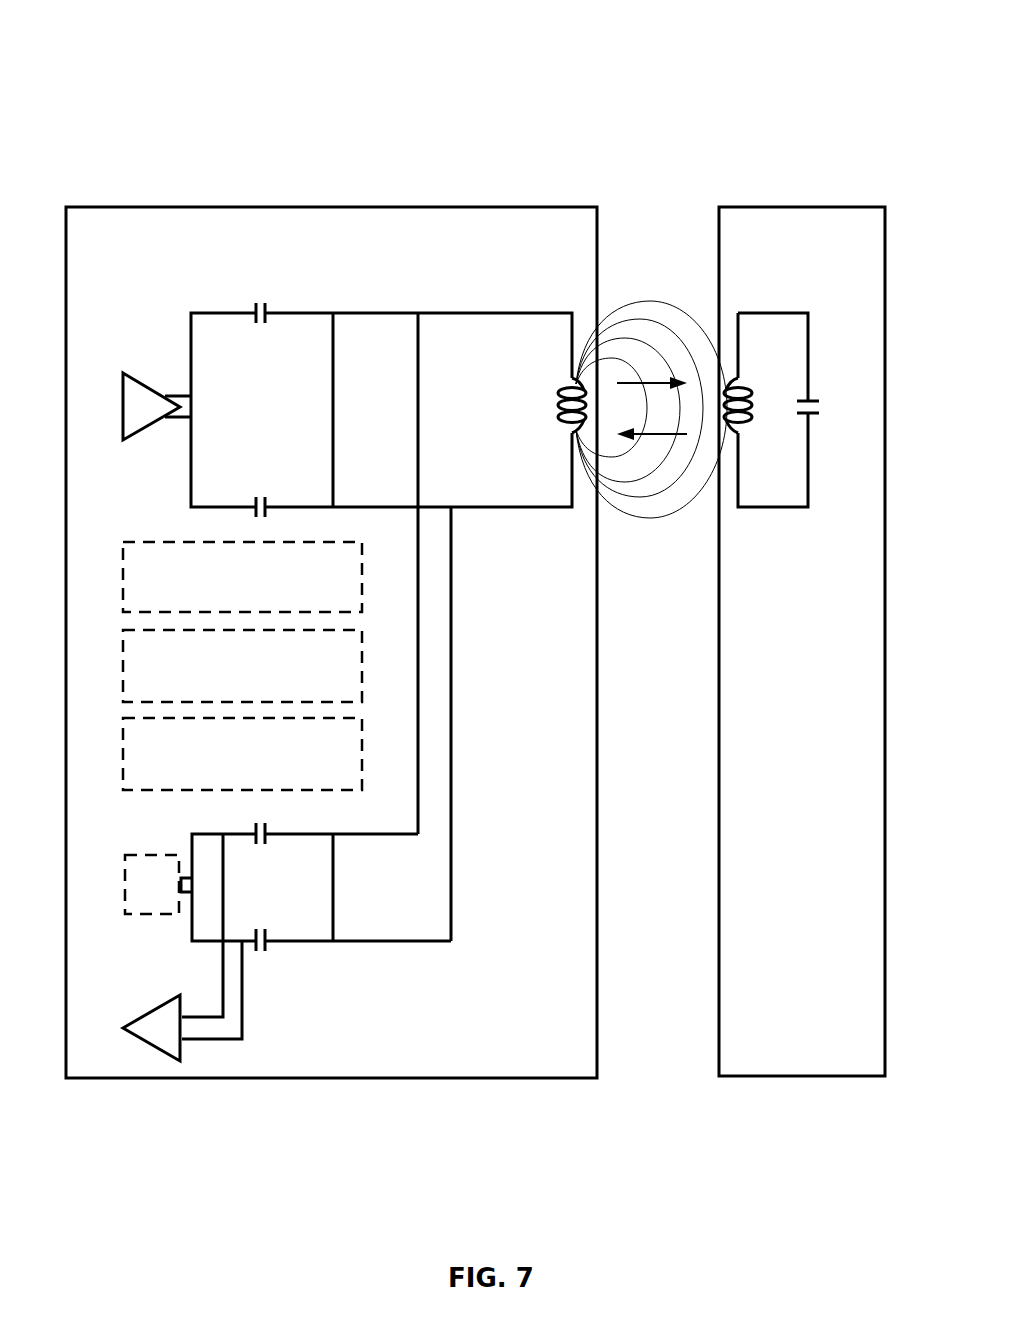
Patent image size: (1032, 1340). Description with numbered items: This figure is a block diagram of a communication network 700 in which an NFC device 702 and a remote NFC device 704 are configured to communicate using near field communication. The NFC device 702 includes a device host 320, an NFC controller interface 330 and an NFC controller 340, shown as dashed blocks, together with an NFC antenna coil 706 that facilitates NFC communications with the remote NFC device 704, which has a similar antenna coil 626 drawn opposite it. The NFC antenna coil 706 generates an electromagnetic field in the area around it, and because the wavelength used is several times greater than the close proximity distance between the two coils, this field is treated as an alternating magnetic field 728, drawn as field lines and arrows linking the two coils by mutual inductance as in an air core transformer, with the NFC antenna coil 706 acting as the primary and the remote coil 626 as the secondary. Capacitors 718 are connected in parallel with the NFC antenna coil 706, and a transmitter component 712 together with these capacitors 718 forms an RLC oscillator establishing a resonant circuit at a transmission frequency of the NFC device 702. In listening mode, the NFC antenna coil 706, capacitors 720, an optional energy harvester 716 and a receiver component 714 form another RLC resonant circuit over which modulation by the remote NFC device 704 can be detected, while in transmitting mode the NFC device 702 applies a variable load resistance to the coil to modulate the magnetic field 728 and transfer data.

The communication network 700 is at (753, 43).
The NFC device 702 is at (287, 207).
The remote NFC device 704 is at (826, 207).
The NFC antenna coil 706 is at (570, 425).
The antenna coil of remote NFC device 626 is at (739, 436).
The transmitter component 712 is at (143, 384).
The receiver component 714 is at (163, 1004).
The energy harvester (EH) 716 is at (150, 854).
The capacitors 718 is at (266, 327).
The capacitors 720 is at (266, 846).
The magnetic field 728 is at (621, 304).
The device host 320 is at (242, 577).
The NFC controller interface 330 is at (242, 666).
The NFC controller 340 is at (242, 754).